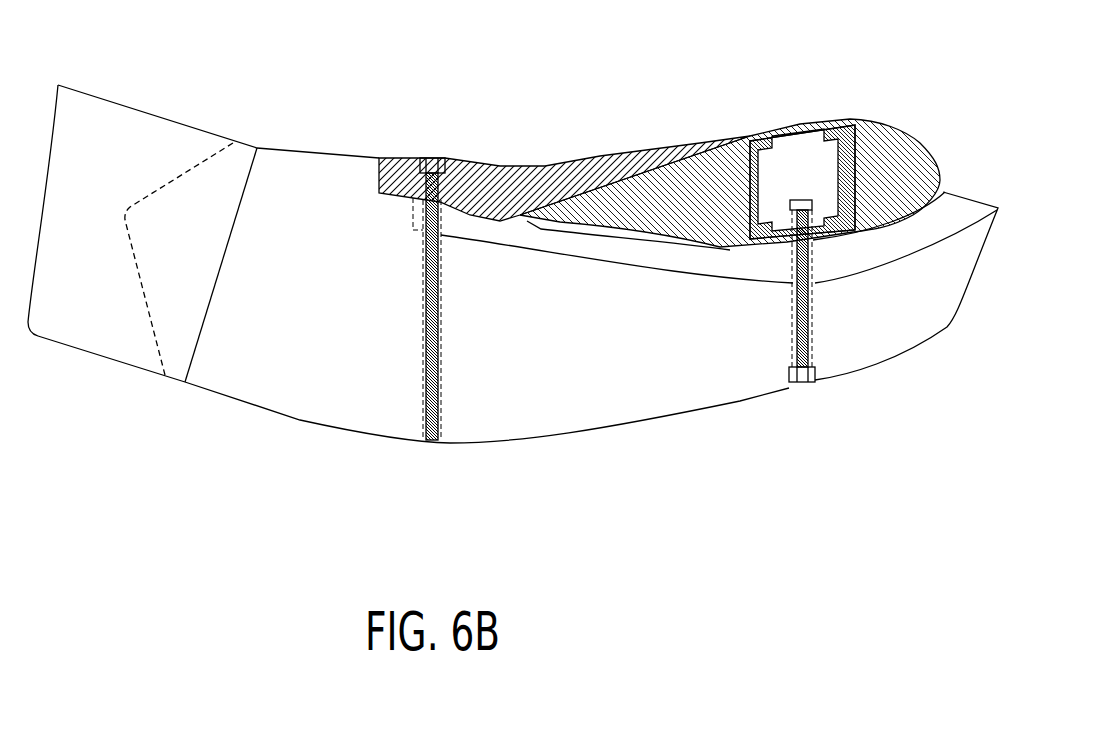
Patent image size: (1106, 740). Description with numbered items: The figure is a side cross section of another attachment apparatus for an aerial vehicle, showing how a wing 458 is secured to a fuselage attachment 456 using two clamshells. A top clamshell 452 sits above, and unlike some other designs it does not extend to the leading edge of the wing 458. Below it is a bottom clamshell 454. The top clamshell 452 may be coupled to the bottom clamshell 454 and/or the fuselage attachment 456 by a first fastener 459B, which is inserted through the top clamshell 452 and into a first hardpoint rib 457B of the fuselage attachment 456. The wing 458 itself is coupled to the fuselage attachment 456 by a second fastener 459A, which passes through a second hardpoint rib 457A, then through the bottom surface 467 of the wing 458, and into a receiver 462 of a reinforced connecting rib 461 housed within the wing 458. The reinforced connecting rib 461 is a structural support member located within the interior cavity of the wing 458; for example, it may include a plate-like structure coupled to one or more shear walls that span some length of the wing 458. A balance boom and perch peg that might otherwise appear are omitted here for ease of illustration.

The top clamshell 452 is at (585, 158).
The bottom clamshell 454 is at (935, 215).
The fuselage attachment 456 is at (962, 300).
The second hardpoint rib 457A is at (813, 358).
The first hardpoint rib 457B is at (443, 410).
The wing 458 is at (863, 128).
The second fastener 459A is at (802, 375).
The first fastener 459B is at (432, 167).
The reinforced connecting rib 461 is at (793, 137).
The receiver 462 is at (808, 207).
The bottom surface of the wing 467 is at (748, 262).